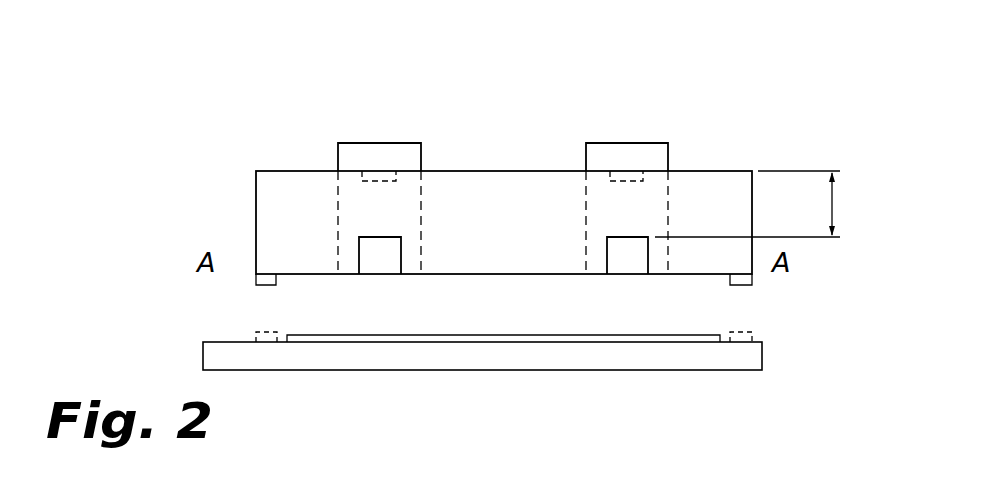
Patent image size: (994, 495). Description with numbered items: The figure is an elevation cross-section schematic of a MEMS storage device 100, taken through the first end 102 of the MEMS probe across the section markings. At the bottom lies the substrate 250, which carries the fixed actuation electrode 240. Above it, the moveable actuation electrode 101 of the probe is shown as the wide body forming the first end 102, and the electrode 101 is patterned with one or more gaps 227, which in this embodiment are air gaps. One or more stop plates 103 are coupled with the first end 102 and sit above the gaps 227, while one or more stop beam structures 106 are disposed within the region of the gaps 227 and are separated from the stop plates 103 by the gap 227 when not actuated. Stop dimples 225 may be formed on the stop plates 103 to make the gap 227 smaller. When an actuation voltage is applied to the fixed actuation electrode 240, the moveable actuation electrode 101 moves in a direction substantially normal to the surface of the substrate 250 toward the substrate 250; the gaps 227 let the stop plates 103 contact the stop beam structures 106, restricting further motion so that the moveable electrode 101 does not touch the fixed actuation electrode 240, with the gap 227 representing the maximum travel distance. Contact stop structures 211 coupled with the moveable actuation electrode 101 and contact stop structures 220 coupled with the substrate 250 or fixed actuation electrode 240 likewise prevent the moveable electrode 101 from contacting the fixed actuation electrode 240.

The MEMS storage device 100 is at (528, 81).
The moveable actuation electrode 101 is at (322, 253).
The first end of MEMS probe 102 is at (277, 199).
The stop plate 103 is at (357, 152).
The stop beam structure 106 is at (388, 265).
The contact stop structure 211 is at (262, 288).
The contact stop structure 220 is at (277, 332).
The stop dimple 225 is at (378, 182).
The gap 227 is at (848, 185).
The fixed actuation electrode 240 is at (480, 334).
The substrate 250 is at (688, 358).